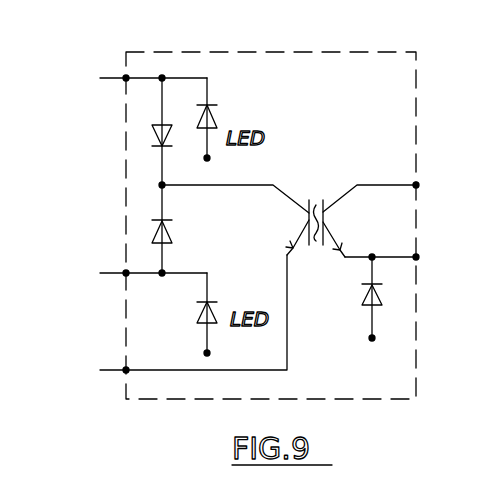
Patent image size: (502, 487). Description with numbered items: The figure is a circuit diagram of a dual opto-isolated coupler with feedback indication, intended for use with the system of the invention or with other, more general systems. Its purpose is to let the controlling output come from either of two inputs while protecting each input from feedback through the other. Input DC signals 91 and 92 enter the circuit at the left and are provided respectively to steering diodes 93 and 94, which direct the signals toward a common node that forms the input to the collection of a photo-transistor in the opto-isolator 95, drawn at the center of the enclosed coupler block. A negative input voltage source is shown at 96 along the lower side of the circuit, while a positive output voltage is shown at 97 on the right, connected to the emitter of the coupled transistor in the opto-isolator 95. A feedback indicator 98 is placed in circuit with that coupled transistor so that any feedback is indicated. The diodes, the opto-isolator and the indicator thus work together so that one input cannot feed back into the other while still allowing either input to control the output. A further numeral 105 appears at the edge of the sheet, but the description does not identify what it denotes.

The input DC signal 91 is at (126, 78).
The input DC signal 92 is at (126, 273).
The steering diode 93 is at (146, 128).
The steering diode 94 is at (153, 231).
The opto-isolator 95 is at (324, 186).
The negative input voltage source 96 is at (126, 372).
The positive output voltage 97 is at (416, 257).
The feedback indicator 98 is at (383, 301).
The reference numeral 105 is at (18, 459).